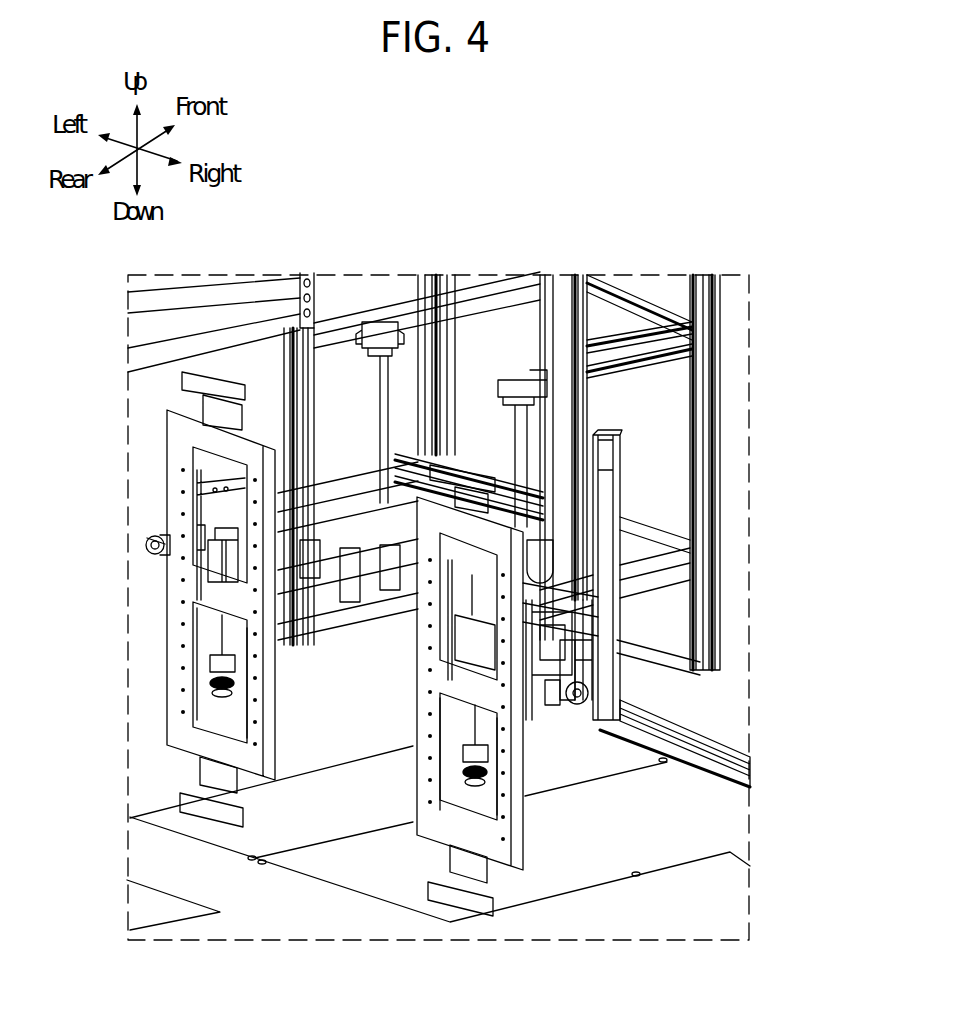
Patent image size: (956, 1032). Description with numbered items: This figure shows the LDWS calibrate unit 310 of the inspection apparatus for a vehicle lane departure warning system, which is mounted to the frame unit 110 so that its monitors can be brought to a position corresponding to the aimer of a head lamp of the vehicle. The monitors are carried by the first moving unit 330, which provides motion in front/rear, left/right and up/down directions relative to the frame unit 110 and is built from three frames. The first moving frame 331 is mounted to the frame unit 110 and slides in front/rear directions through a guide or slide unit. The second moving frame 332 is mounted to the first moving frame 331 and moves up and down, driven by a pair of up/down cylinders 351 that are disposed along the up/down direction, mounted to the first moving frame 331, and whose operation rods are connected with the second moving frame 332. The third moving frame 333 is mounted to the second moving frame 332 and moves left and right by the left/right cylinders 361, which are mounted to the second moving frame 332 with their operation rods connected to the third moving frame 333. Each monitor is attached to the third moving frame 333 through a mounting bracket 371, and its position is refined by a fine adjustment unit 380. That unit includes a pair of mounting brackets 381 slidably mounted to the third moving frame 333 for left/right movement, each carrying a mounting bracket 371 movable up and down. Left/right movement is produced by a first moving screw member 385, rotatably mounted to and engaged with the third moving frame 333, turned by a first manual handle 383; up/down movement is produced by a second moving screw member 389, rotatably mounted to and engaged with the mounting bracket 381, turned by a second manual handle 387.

The frame unit 110 is at (260, 307).
The LDWS calibrate unit 310 is at (427, 163).
The first moving unit 330 is at (638, 683).
The first moving frame 331 is at (717, 392).
The second moving frame 332 is at (703, 623).
The third moving frame 333 is at (628, 690).
The up/down cylinder 351 is at (370, 322).
The left/right cylinder 361 is at (580, 722).
The mounting bracket 371 is at (192, 622).
The fine adjustment unit 380 is at (130, 556).
The mounting bracket 381 is at (220, 515).
The first manual handle 383 is at (147, 538).
The first moving screw member 385 is at (190, 603).
The second manual handle 387 is at (225, 738).
The second moving screw member 389 is at (208, 687).